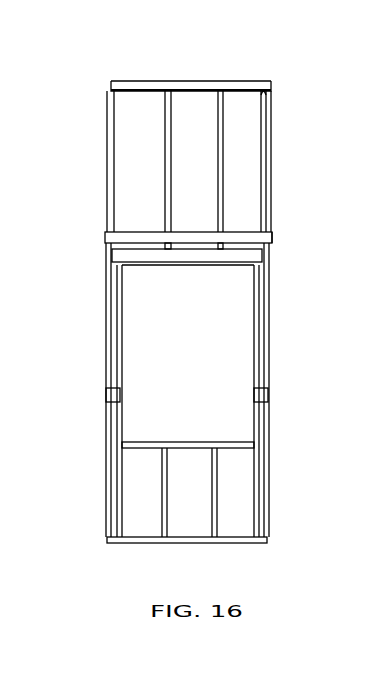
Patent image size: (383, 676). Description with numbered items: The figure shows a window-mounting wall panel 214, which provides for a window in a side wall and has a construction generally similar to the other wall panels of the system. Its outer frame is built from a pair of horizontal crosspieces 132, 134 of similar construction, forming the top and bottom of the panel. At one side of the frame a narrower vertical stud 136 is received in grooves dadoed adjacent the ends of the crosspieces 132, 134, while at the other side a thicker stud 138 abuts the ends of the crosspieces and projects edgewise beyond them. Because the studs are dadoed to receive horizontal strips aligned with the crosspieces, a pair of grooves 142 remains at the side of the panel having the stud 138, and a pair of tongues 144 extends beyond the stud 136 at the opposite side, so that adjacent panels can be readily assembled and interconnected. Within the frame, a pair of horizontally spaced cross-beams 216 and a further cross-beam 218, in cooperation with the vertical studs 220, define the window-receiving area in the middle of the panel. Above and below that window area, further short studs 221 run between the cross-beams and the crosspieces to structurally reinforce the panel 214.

The panel 214 is at (149, 81).
The horizontal crosspiece 132 is at (208, 88).
The horizontal crosspiece 134 is at (210, 540).
The vertical stud 136 is at (261, 124).
The stud 138 is at (107, 130).
The grooves 142 is at (105, 237).
The tongues 144 is at (270, 238).
The cross-beams 216 is at (178, 249).
The cross-beam 218 is at (197, 442).
The vertical studs 220 is at (254, 330).
The short studs 221 is at (219, 143).